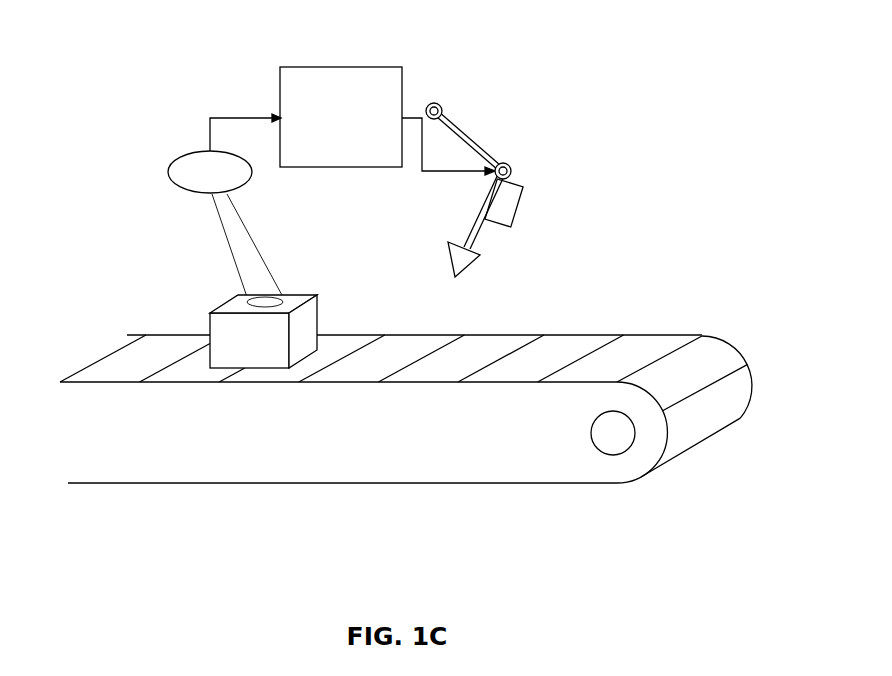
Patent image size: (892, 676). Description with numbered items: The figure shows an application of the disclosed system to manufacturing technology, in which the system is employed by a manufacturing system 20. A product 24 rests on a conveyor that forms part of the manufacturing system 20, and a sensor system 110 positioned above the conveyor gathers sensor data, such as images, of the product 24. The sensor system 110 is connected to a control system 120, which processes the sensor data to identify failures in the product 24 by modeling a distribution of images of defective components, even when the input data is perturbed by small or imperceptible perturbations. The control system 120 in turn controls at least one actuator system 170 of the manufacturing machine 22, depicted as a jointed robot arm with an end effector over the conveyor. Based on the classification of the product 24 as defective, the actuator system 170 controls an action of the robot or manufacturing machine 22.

The manufacturing system 20 is at (332, 484).
The manufacturing machine 22 is at (482, 145).
The product 24 is at (316, 320).
The sensor system 110 is at (168, 173).
The control system 120 is at (278, 74).
The actuator system 170 is at (523, 200).